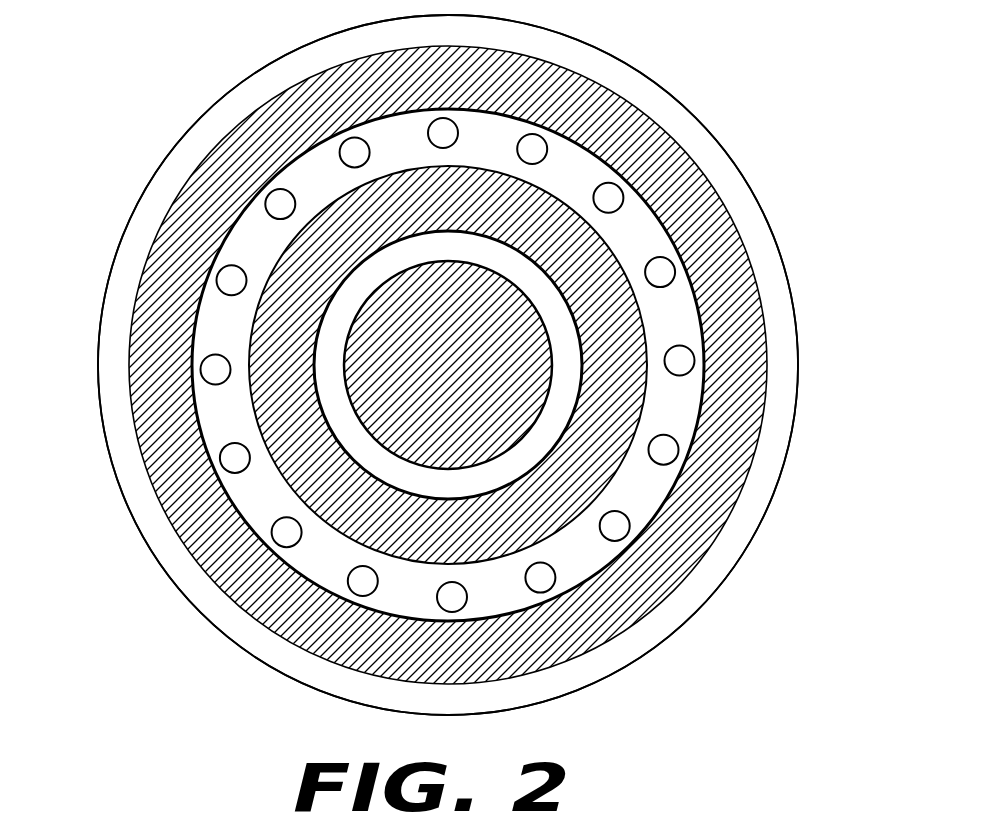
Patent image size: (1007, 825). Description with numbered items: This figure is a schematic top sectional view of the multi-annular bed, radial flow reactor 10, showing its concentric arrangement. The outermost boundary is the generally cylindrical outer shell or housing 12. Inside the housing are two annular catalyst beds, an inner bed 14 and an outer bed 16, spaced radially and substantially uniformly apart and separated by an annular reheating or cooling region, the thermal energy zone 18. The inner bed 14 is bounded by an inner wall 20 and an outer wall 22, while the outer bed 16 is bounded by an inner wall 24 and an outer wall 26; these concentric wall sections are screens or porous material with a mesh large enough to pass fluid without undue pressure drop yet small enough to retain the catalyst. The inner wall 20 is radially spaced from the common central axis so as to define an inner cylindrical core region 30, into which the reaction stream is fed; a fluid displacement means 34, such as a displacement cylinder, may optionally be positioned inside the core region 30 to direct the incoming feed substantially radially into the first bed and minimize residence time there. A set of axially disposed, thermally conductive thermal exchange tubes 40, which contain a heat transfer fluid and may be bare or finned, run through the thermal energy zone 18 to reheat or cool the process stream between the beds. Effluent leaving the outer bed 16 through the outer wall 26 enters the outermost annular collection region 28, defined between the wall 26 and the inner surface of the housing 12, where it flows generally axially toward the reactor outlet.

The radial flow reactor 10 is at (456, 365).
The outer shell or housing 12 is at (768, 220).
The inner catalyst bed 14 is at (583, 467).
The outer catalyst bed 16 is at (730, 314).
The thermal energy zone 18 is at (518, 316).
The inner wall of inner bed 20 is at (367, 268).
The outer wall of inner bed 22 is at (242, 252).
The inner wall of outer bed 24 is at (213, 293).
The outer wall of outer bed 26 is at (133, 413).
The annular collection region 28 is at (322, 680).
The inner cylindrical core region 30 is at (342, 420).
The fluid displacement means 34 is at (402, 460).
The thermal exchange tubes 40 is at (344, 142).